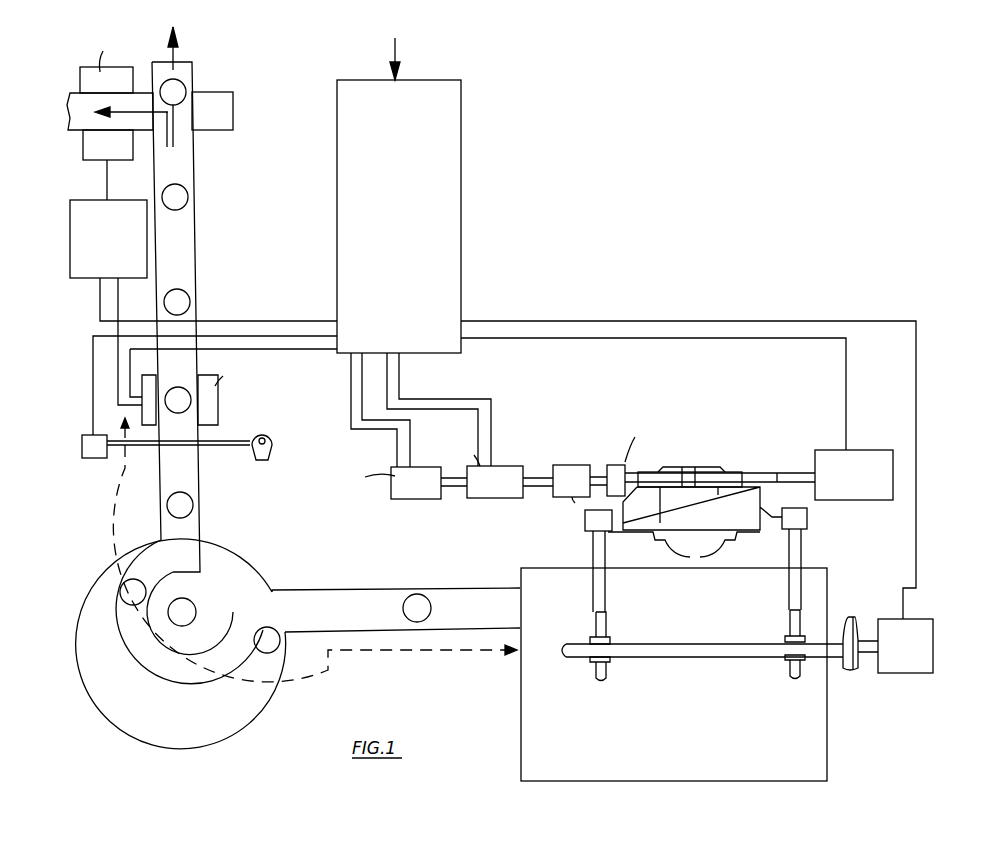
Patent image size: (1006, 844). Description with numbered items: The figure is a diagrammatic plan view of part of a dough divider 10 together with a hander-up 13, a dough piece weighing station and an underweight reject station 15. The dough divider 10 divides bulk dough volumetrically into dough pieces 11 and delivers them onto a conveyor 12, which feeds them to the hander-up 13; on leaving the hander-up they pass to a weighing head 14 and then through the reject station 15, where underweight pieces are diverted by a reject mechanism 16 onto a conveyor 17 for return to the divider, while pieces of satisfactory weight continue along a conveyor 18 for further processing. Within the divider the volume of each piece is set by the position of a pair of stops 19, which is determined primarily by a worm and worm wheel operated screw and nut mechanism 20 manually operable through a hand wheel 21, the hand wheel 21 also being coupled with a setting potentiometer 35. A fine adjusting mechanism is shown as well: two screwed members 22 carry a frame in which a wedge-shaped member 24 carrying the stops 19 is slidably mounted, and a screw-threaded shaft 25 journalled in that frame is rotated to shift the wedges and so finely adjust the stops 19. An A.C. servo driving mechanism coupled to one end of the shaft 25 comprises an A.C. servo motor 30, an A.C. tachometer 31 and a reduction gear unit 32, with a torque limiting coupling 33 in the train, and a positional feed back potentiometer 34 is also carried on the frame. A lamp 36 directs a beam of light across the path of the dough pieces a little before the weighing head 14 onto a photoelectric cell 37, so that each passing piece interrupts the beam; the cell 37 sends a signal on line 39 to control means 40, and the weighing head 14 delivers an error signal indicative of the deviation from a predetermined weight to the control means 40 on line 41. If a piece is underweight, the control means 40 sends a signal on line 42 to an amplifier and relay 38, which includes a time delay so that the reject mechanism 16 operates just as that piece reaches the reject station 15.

The dough divider 10 is at (827, 753).
The dough pieces 11 is at (417, 622).
The conveyor 12 is at (447, 588).
The hander-up 13 is at (255, 557).
The weighing head 14 is at (220, 397).
The underweight reject station 15 is at (230, 160).
The reject mechanism 16 is at (90, 145).
The conveyor 17 is at (73, 98).
The conveyor 18 is at (183, 72).
The stops 19 is at (684, 548).
The screw and nut mechanism 20 is at (612, 638).
The hand wheel 21 is at (853, 670).
The screwed members 22 is at (595, 553).
The wedge-shaped member 24 is at (745, 502).
The screw-threaded shaft 25 is at (708, 475).
The A.C. servo motor 30 is at (493, 500).
The A.C. tachometer 31 is at (415, 500).
The reduction gear unit 32 is at (573, 465).
The torque limiting coupling 33 is at (616, 465).
The positional feed back potentiometer 34 is at (872, 450).
The setting potentiometer 35 is at (917, 623).
The lamp 36 is at (272, 450).
The photoelectric cell 37 is at (90, 446).
The amplifier and relay 38 is at (80, 257).
The line 39 is at (92, 374).
The control means 40 is at (461, 194).
The line 41 is at (291, 351).
The line 42 is at (117, 298).